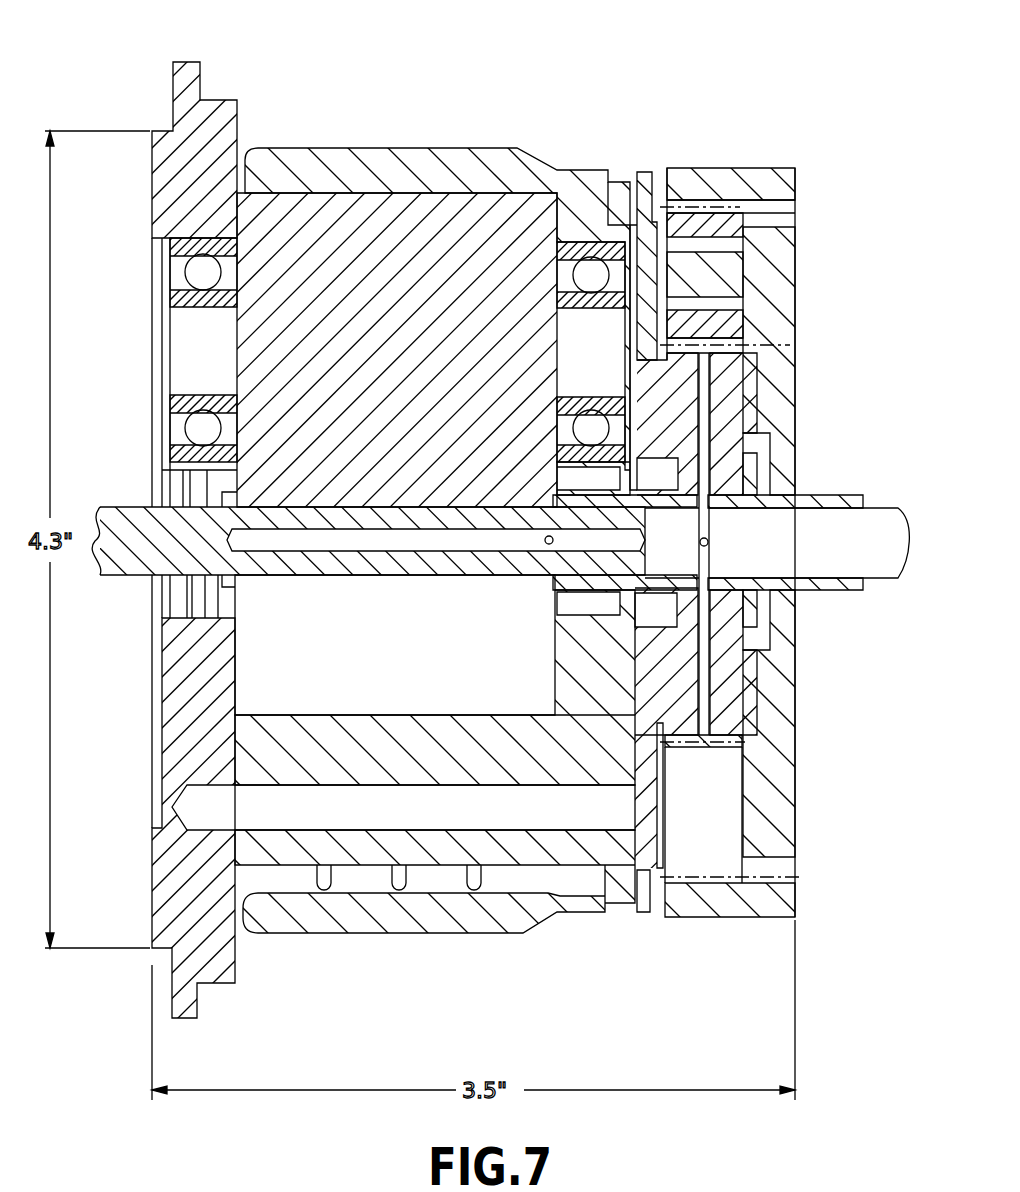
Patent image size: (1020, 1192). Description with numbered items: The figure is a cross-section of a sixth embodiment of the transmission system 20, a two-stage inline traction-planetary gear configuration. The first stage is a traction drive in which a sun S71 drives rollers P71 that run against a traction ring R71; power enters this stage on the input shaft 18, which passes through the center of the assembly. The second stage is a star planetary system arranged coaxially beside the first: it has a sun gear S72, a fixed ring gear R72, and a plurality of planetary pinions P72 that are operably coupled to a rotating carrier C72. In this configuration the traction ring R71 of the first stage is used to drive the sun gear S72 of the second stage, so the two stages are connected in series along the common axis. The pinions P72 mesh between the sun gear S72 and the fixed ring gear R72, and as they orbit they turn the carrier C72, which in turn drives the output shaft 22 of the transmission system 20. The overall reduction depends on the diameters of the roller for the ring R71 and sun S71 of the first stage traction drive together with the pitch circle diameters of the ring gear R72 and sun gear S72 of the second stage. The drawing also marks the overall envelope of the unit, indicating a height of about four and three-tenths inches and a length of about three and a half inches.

The transmission system 20 is at (347, 80).
The input shaft 18 is at (125, 578).
The output shaft 22 is at (835, 496).
The roller P71 is at (400, 203).
The traction ring R71 is at (483, 150).
The sun S71 is at (345, 580).
The ring gear R72 is at (672, 168).
The planetary pinion P72 is at (740, 210).
The carrier C72 is at (790, 268).
The sun gear S72 is at (745, 343).